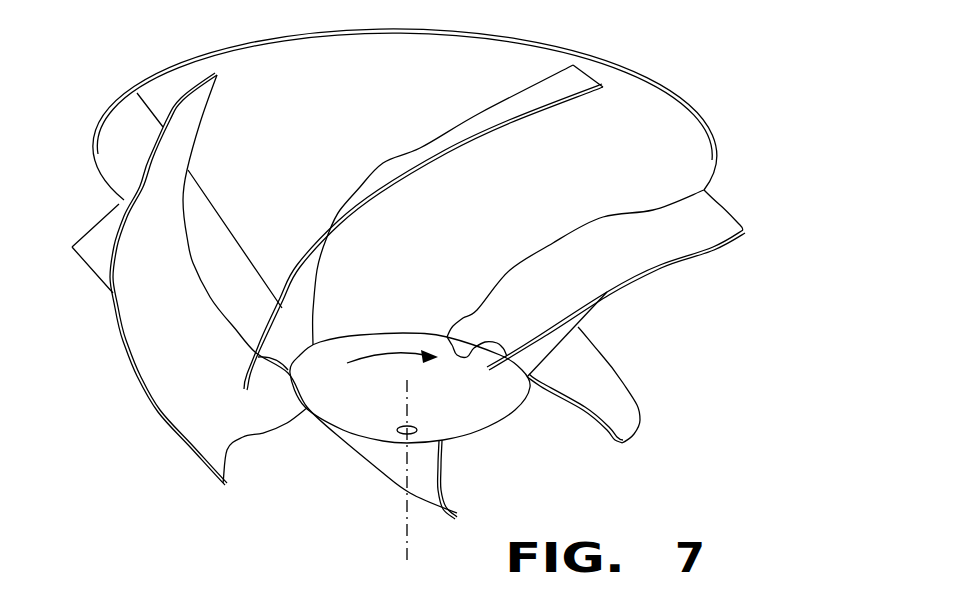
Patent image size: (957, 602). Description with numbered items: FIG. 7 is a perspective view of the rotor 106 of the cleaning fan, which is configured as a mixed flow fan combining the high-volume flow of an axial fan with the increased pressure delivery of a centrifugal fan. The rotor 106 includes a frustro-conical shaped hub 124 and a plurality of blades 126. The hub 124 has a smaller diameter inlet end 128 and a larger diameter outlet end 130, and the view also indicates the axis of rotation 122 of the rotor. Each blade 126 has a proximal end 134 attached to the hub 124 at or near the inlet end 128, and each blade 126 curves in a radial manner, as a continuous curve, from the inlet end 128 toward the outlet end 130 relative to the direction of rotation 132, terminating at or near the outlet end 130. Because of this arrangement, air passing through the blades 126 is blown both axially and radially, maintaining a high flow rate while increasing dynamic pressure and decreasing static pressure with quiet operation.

The rotor 106 is at (118, 80).
The axis of rotation 122 is at (407, 535).
The hub 124 is at (632, 137).
The blades 126 is at (200, 122).
The inlet end 128 is at (527, 367).
The outlet end 130 is at (713, 123).
The direction of rotation 132 is at (390, 360).
The proximal end 134 is at (470, 348).